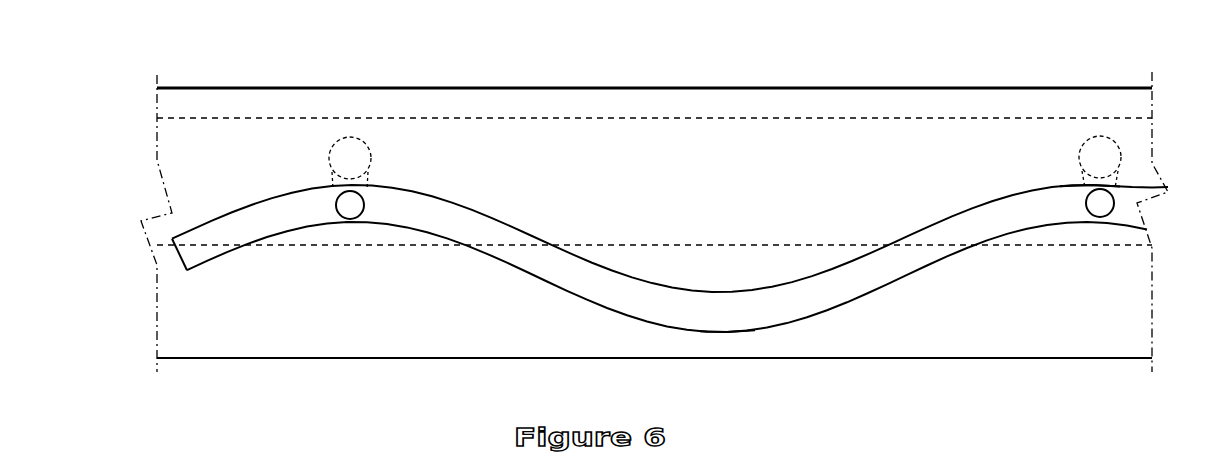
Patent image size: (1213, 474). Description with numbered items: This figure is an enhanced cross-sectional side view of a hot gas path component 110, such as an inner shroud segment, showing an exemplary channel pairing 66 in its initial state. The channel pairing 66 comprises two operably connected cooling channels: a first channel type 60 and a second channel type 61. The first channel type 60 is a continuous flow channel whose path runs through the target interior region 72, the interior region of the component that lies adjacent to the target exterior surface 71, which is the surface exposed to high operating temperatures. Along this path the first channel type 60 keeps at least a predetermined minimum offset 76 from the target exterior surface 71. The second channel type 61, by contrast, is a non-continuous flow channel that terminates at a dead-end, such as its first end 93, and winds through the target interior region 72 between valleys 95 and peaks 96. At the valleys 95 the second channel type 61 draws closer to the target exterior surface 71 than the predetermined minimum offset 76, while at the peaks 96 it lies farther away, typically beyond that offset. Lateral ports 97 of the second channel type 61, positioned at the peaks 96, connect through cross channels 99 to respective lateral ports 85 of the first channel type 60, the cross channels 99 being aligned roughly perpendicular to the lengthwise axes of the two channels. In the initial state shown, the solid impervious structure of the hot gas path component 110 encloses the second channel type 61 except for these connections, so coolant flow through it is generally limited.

The hot gas path component 110 is at (458, 82).
The first channel type 60 is at (638, 135).
The channel pairing 66 is at (880, 106).
The target interior region 72 is at (669, 272).
The peaks 96 is at (380, 185).
The second channel type 61 is at (637, 302).
The valleys 95 is at (727, 332).
The first end 93 is at (174, 258).
The cross channels 99 is at (1082, 181).
The lateral ports 97 is at (350, 202).
The lateral ports 85 is at (335, 143).
The target exterior surface 71 is at (362, 358).
The predetermined minimum offset 76 is at (345, 245).